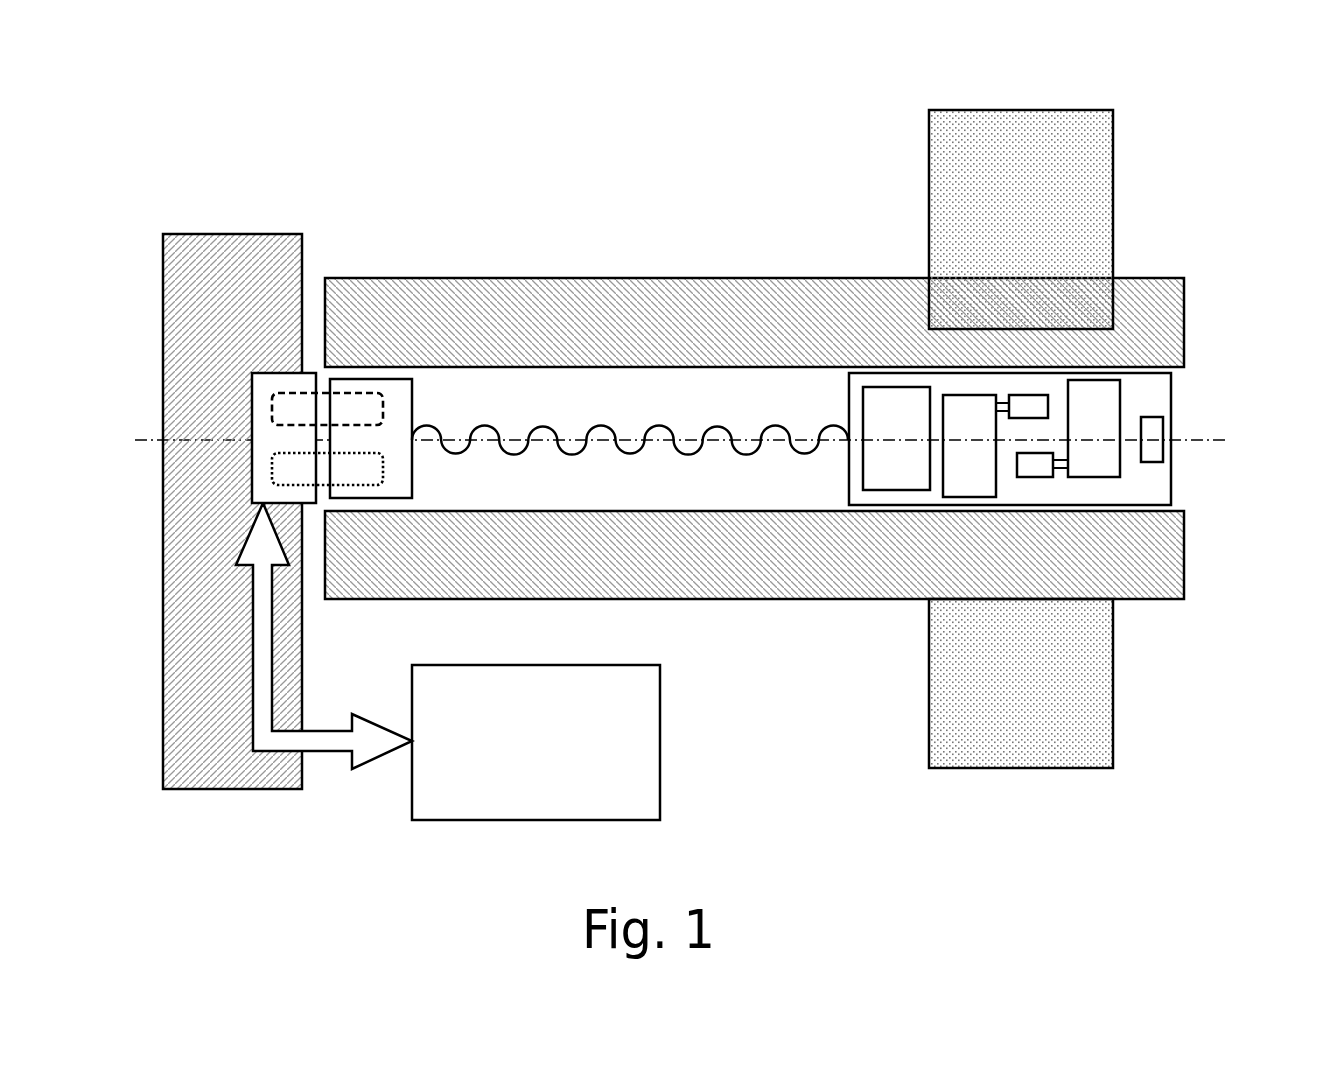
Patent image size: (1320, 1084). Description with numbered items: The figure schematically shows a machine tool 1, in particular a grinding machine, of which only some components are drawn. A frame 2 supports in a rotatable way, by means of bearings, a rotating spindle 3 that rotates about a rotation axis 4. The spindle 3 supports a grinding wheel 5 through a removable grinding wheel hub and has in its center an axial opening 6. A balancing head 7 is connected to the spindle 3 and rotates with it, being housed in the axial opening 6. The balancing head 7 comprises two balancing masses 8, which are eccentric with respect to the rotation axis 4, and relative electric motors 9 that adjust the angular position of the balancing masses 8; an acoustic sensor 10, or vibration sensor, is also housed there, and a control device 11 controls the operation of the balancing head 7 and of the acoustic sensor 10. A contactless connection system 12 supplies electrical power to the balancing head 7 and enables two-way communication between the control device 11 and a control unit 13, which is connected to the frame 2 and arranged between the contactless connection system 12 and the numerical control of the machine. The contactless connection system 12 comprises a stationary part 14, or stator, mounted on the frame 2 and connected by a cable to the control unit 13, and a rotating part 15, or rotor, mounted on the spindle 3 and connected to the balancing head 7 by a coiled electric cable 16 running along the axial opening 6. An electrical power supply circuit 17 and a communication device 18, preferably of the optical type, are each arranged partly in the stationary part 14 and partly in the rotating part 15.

The machine tool 1 is at (1198, 902).
The frame 2 is at (237, 262).
The rotating spindle 3 is at (668, 300).
The rotation axis 4 is at (152, 442).
The grinding wheel 5 is at (1025, 132).
The axial opening 6 is at (572, 510).
The balancing head 7 is at (886, 506).
The balancing masses 8 is at (1122, 394).
The electric motors 9 is at (1028, 392).
The acoustic sensor 10 is at (1165, 450).
The control device 11 is at (893, 406).
The contactless connection system 12 is at (318, 270).
The control unit 13 is at (536, 742).
The stationary part 14 is at (250, 412).
The rotating part 15 is at (367, 385).
The coiled electric cable 16 is at (484, 424).
The electrical power supply circuit 17 is at (293, 410).
The communication device 18 is at (345, 472).